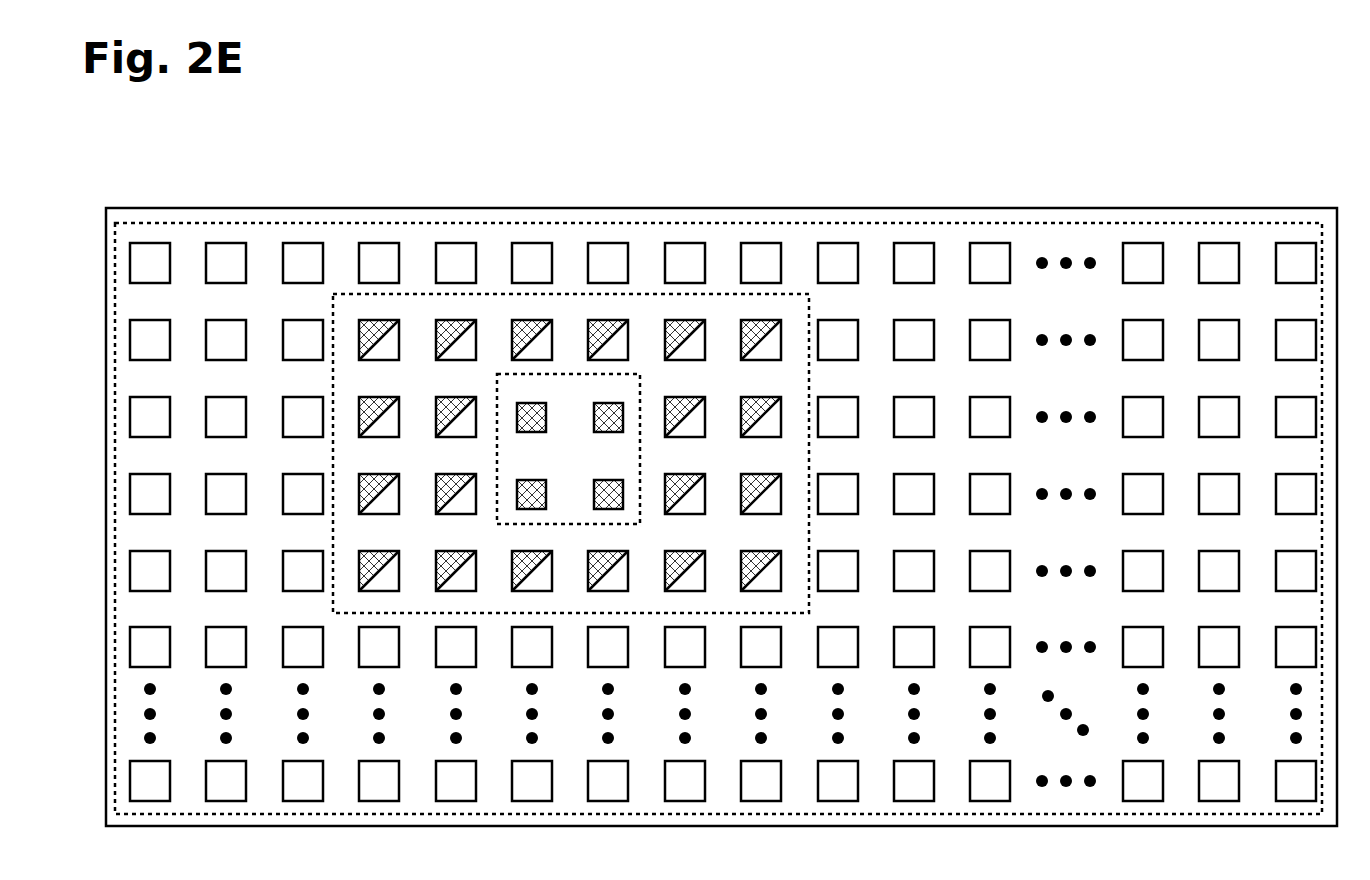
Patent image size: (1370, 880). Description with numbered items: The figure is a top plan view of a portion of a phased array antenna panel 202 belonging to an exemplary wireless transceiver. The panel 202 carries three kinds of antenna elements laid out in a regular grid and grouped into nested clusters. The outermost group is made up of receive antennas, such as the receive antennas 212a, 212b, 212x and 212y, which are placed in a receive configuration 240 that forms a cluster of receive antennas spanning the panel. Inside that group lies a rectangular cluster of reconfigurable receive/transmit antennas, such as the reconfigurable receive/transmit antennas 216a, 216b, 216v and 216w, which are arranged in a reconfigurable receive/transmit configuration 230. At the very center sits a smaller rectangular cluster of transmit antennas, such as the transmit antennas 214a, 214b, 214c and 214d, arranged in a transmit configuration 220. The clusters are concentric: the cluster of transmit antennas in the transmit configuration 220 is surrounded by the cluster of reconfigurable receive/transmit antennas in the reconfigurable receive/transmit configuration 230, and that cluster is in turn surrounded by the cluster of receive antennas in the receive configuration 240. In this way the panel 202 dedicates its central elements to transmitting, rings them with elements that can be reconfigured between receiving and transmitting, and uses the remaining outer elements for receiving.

The phased array antenna panel 202 is at (1245, 168).
The receive configuration 240 is at (1047, 223).
The reconfigurable receive/transmit configuration 230 is at (810, 319).
The transmit configuration 220 is at (640, 395).
The receive antenna 212a is at (150, 242).
The receive antenna 212b is at (227, 242).
The receive antenna 212x is at (1219, 803).
The receive antenna 212y is at (1300, 803).
The reconfigurable receive/transmit antenna 216a is at (358, 340).
The reconfigurable receive/transmit antenna 216b is at (433, 340).
The reconfigurable receive/transmit antenna 216v is at (663, 567).
The reconfigurable receive/transmit antenna 216w is at (740, 568).
The transmit antenna 214a is at (516, 414).
The transmit antenna 214b is at (594, 414).
The transmit antenna 214c is at (516, 490).
The transmit antenna 214d is at (594, 492).